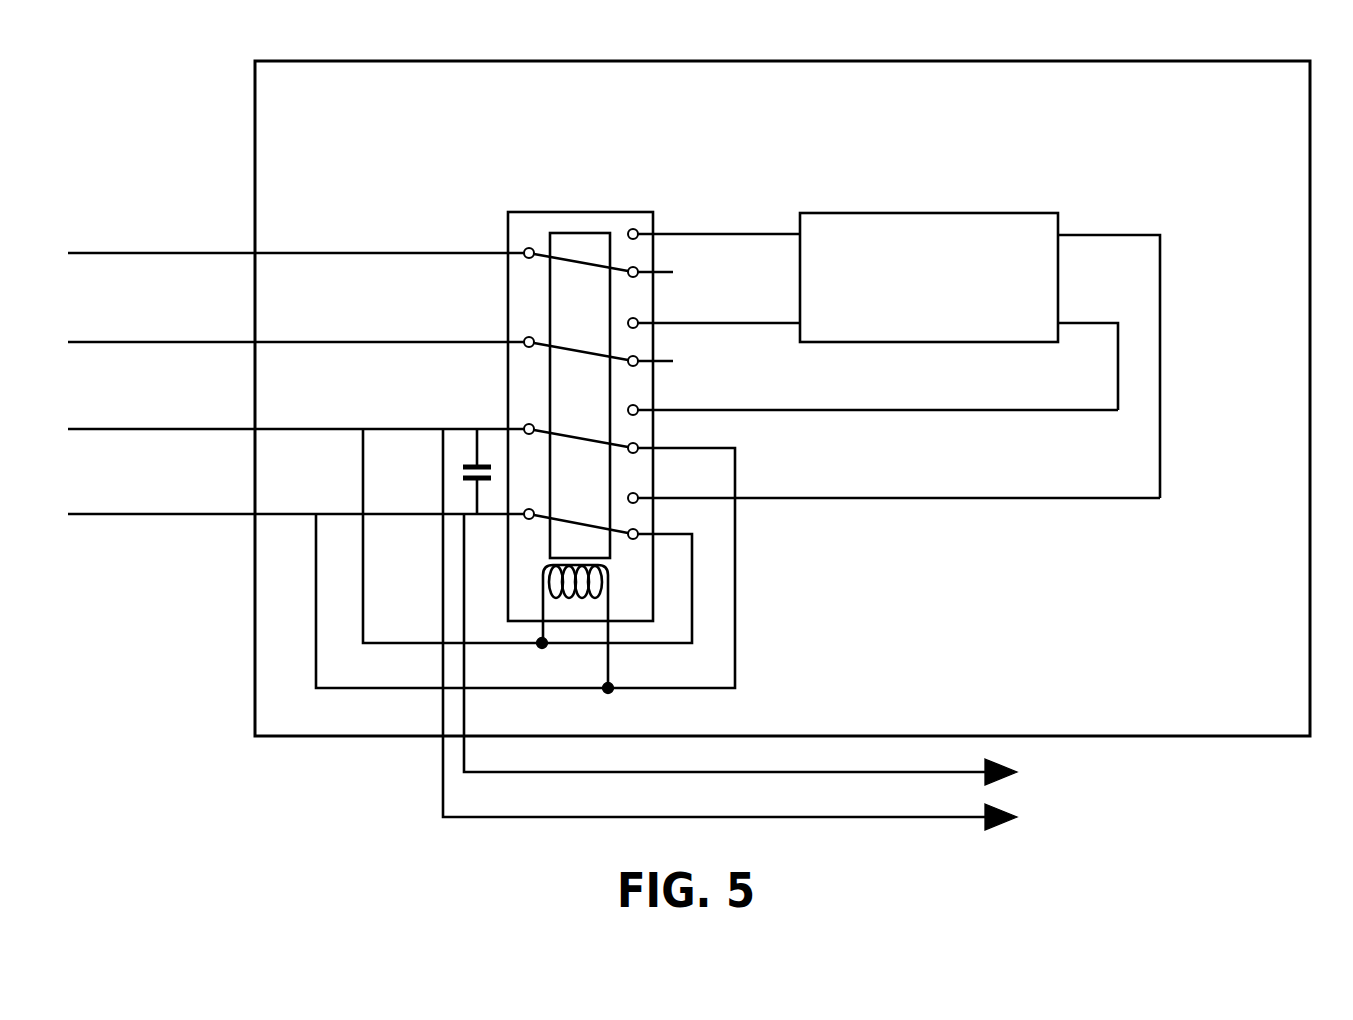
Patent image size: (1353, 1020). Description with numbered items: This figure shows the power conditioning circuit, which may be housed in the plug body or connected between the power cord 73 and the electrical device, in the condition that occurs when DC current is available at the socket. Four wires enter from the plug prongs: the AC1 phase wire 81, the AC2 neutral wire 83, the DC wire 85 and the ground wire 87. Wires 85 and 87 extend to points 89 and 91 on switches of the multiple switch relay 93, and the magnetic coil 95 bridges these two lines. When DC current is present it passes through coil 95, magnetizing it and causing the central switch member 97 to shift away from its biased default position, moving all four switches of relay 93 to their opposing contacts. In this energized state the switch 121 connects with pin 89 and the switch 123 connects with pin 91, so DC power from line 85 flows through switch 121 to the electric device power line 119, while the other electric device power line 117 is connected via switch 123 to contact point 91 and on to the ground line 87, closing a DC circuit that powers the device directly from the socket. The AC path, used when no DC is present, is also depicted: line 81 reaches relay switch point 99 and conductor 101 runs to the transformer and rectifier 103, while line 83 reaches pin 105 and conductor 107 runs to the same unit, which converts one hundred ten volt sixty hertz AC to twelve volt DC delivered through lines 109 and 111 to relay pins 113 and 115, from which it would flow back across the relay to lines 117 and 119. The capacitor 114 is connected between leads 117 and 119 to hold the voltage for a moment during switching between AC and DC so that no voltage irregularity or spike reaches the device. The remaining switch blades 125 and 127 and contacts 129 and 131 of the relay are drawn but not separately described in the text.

The power cord 73 is at (853, 836).
The AC1 wire 81 is at (186, 252).
The AC2 wire 83 is at (205, 341).
The DC wire 85 is at (184, 428).
The ground wire 87 is at (180, 516).
The relay switch point 89 is at (636, 540).
The relay switch point 91 is at (638, 452).
The multiple switch relay 93 is at (590, 211).
The magnetic coil 95 is at (610, 582).
The central switch member 97 is at (558, 232).
The relay switch point 99 is at (637, 230).
The conductor 101 is at (752, 233).
The transformer and rectifier 103 is at (1010, 212).
The relay pin 105 is at (637, 326).
The conductor 107 is at (758, 322).
The DC output line 109 is at (1160, 337).
The DC output line 111 is at (1118, 383).
The relay pin 113 is at (638, 502).
The capacitor 114 is at (462, 470).
The relay pin 115 is at (637, 408).
The electric device power line 117 is at (500, 818).
The electric device power line 119 is at (720, 773).
The relay switch 121 is at (557, 522).
The relay switch 123 is at (571, 438).
The switch blade 125 is at (571, 351).
The switch blade 127 is at (571, 262).
The relay contact 129 is at (663, 274).
The relay contact 131 is at (663, 364).